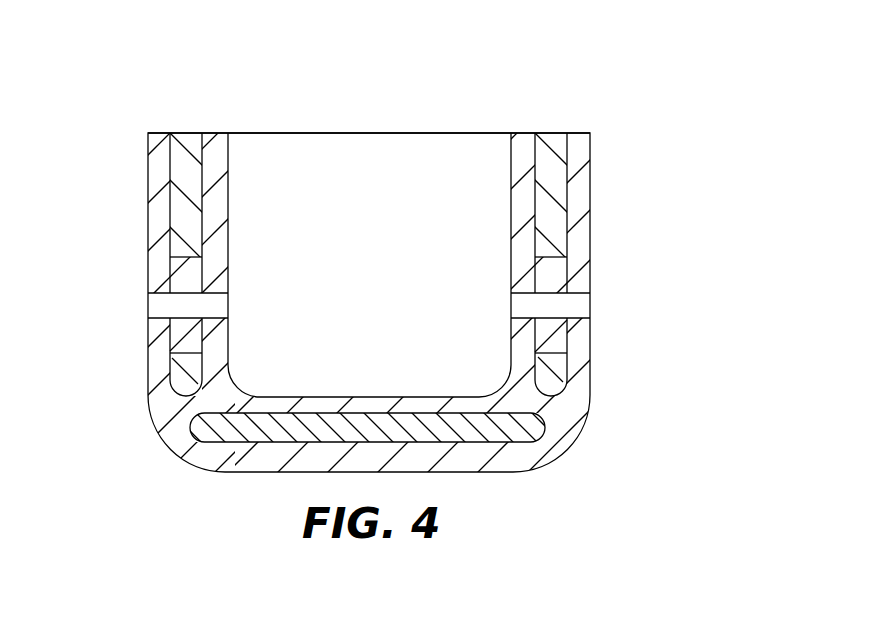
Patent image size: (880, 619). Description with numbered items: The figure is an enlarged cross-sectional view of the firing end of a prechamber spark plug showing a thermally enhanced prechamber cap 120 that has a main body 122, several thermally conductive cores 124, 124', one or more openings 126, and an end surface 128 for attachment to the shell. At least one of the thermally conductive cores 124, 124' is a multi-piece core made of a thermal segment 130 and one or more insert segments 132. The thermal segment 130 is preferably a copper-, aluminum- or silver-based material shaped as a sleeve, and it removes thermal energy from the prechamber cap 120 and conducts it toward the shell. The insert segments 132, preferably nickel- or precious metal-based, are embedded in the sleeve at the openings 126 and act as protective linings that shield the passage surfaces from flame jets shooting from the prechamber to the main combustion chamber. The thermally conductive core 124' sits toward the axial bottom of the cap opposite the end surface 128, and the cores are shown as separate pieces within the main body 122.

The thermally enhanced prechamber cap 120 is at (693, 65).
The main body 122 is at (572, 408).
The thermally conductive core 124 is at (440, 309).
The thermally conductive core 124' is at (409, 309).
The opening 126 is at (160, 306).
The end surface 128 is at (577, 133).
The thermal segment 130 is at (556, 242).
The insert segment 132 is at (547, 273).